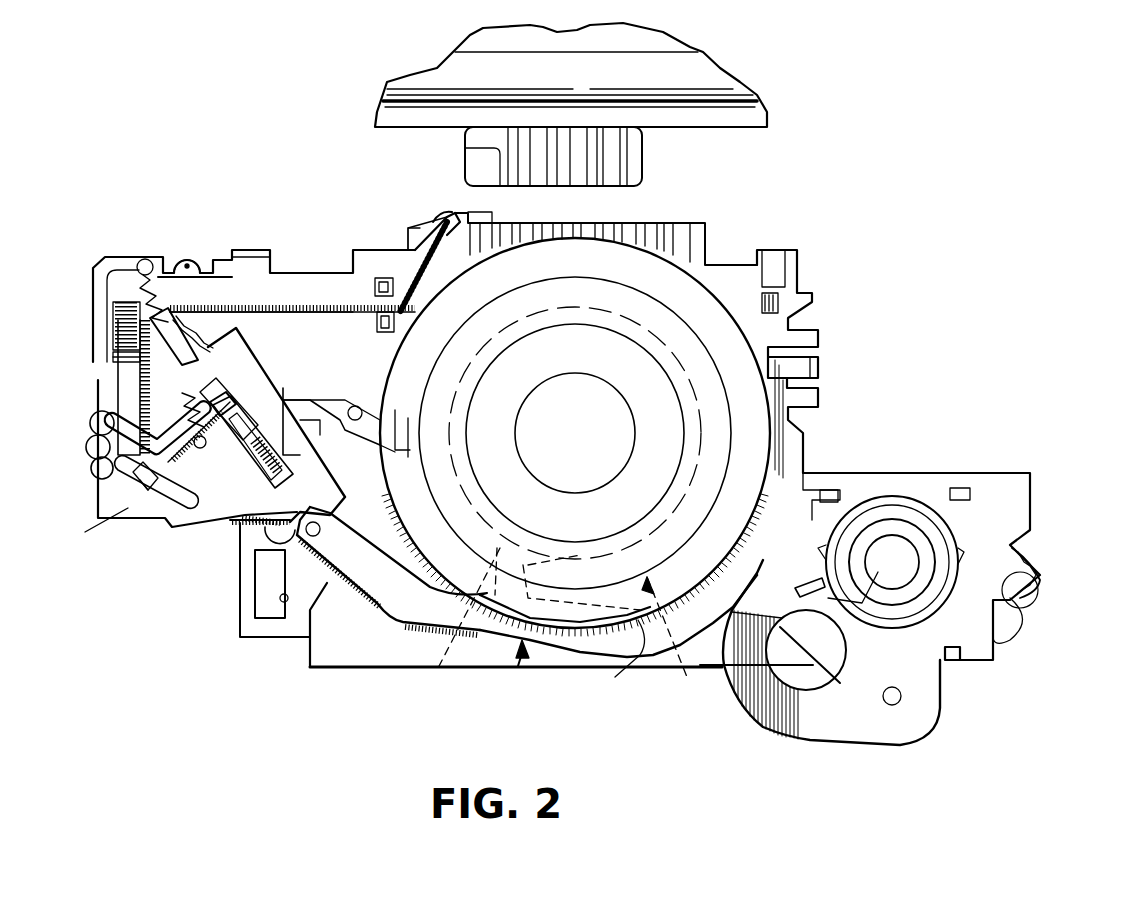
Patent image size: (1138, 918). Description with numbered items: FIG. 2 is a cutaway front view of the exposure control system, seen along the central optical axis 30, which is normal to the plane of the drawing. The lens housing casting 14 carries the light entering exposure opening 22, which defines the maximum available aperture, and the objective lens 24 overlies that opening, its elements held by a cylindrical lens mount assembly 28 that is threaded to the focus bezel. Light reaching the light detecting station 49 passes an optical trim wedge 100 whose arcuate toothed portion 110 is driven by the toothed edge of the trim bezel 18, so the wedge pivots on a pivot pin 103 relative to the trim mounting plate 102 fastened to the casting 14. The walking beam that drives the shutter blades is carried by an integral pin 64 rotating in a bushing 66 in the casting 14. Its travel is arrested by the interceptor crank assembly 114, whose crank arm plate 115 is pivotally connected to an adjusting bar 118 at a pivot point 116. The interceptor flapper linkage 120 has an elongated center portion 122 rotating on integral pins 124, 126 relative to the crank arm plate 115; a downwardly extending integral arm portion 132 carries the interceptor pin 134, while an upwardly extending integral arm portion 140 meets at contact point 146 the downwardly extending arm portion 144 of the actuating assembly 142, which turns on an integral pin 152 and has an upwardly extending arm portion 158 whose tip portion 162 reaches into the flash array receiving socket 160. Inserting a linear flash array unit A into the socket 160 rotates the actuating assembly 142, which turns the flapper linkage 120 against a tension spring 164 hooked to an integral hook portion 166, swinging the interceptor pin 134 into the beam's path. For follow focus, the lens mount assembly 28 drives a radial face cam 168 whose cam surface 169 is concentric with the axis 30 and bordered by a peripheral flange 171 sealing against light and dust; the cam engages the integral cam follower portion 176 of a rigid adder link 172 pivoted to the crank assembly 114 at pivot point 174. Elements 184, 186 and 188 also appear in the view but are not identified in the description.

The linear flash array unit A is at (740, 115).
The lens housing casting 14 is at (360, 669).
The trim bezel 18 is at (905, 618).
The light entering exposure opening 22 is at (622, 397).
The objective lens 24 is at (561, 448).
The lens mount assembly 28 is at (676, 383).
The central optical axis 30 is at (578, 410).
The light detecting station 49 is at (902, 568).
The integral pin 64 is at (339, 412).
The bushing 66 is at (360, 407).
The optical trim wedge 100 is at (1032, 556).
The trim mounting plate 102 is at (806, 742).
The pivot pin 103 is at (902, 696).
The arcuate toothed portion 110 is at (1030, 600).
The interceptor crank assembly 114 is at (168, 535).
The crank arm plate 115 is at (248, 385).
The pivot point 116 is at (110, 422).
The adjusting bar 118 is at (110, 362).
The interceptor flapper linkage 120 is at (167, 442).
The elongated center portion 122 is at (190, 486).
The integral pin 124 is at (128, 508).
The integral pin 126 is at (285, 395).
The integral arm portion 132 is at (287, 452).
The interceptor pin 134 is at (262, 522).
The integral arm portion 140 is at (133, 482).
The actuating assembly 142 is at (301, 268).
The integral arm portion 144 is at (108, 384).
The engaging contact point 146 is at (310, 318).
The integral pin 152 is at (395, 320).
The integral arm portion 158 is at (418, 230).
The linear flash array receiving socket 160 is at (598, 222).
The tip portion 162 is at (432, 214).
The tension spring 164 is at (213, 360).
The integral hook portion 166 is at (190, 452).
The radial face cam 168 is at (680, 668).
The cam surface 169 is at (440, 668).
The peripheral flange 171 is at (618, 670).
The adder link 172 is at (518, 668).
The pivot point 174 is at (302, 533).
The integral cam follower portion 176 is at (560, 556).
The spring 184 is at (86, 452).
The spring anchor 186 is at (200, 322).
The spring 188 is at (185, 262).